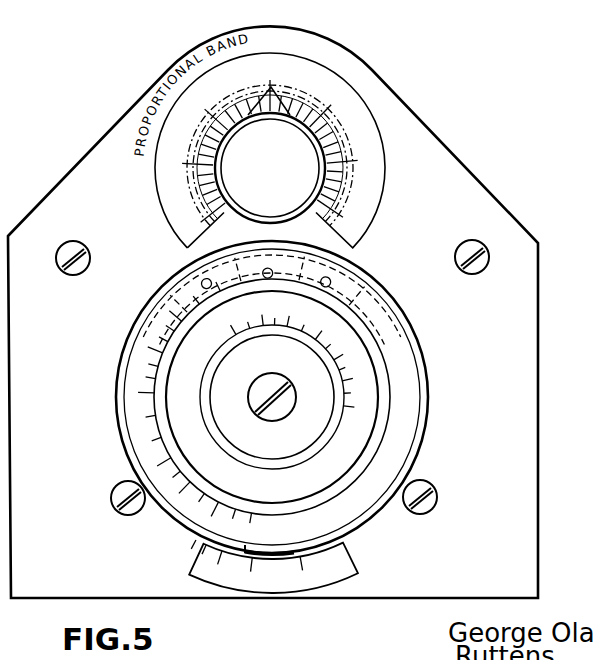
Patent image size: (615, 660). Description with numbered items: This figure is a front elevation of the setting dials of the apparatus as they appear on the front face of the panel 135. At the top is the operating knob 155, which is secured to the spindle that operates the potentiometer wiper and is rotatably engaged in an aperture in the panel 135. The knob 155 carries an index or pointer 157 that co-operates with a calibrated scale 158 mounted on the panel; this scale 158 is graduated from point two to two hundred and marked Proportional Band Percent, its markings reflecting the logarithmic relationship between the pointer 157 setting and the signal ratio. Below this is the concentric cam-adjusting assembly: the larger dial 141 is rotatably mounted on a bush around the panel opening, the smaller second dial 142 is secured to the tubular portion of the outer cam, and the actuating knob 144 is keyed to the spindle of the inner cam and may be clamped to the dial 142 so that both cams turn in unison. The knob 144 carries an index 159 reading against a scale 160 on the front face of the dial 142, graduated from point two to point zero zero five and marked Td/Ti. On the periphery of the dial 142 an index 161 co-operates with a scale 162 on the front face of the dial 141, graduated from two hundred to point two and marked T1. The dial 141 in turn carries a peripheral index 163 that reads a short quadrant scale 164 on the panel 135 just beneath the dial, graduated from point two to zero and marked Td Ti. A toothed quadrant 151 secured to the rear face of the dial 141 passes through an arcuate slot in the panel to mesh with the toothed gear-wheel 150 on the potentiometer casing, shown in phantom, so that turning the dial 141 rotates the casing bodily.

The panel 135 is at (514, 220).
The dial 141 is at (424, 423).
The second dial 142 is at (372, 437).
The actuating knob 144 is at (284, 445).
The toothed gear-wheel 150 is at (352, 140).
The toothed quadrant 151 is at (340, 290).
The operating knob 155 is at (283, 166).
The pointer 157 is at (273, 88).
The calibrated scale 158 is at (360, 117).
The index 159 is at (272, 397).
The scale 160 is at (353, 395).
The index 161 is at (230, 300).
The scale 162 is at (146, 362).
The index 163 is at (272, 549).
The short quadrant scale 164 is at (358, 568).